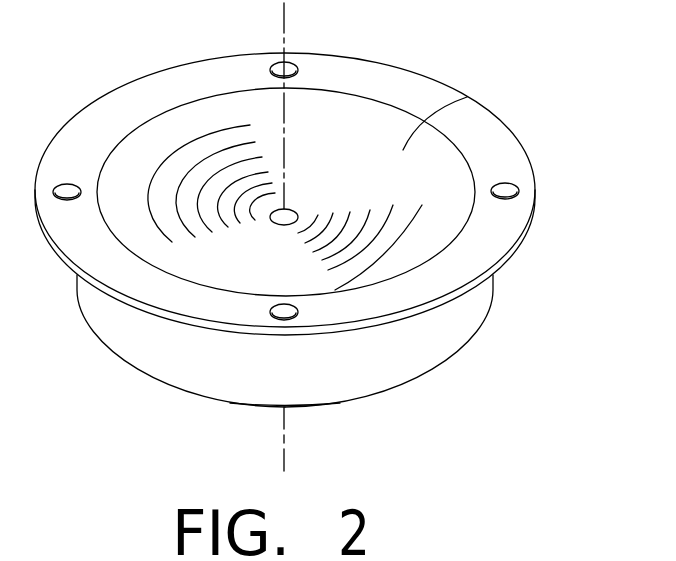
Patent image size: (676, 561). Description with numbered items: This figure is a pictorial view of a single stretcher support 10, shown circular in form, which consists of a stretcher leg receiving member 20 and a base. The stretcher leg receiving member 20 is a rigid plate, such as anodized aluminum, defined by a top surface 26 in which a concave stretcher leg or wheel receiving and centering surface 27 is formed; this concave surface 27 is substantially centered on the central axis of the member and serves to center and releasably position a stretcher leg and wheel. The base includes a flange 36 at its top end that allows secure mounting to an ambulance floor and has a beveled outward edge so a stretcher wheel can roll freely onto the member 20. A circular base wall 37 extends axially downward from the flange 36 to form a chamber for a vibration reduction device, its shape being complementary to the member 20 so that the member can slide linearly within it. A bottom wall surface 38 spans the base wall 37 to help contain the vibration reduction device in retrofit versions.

The support 10 is at (507, 48).
The stretcher leg receiving member 20 is at (447, 160).
The top surface 26 is at (357, 138).
The concave stretcher leg or wheel receiving and centering surface 27 is at (467, 97).
The flange 36 is at (232, 65).
The base wall 37 is at (473, 305).
The bottom wall surface 38 is at (309, 407).